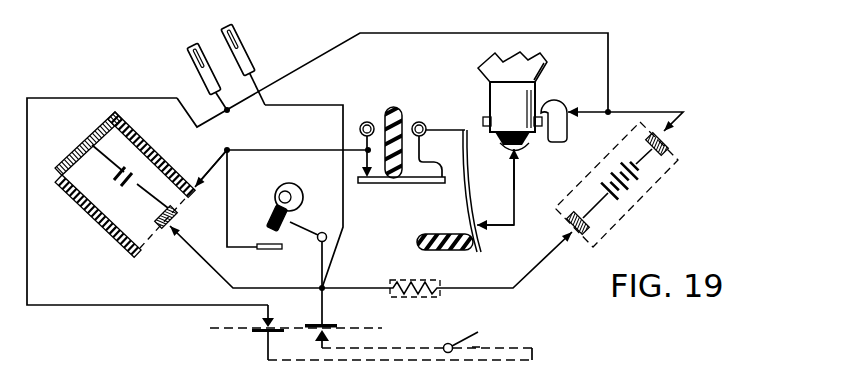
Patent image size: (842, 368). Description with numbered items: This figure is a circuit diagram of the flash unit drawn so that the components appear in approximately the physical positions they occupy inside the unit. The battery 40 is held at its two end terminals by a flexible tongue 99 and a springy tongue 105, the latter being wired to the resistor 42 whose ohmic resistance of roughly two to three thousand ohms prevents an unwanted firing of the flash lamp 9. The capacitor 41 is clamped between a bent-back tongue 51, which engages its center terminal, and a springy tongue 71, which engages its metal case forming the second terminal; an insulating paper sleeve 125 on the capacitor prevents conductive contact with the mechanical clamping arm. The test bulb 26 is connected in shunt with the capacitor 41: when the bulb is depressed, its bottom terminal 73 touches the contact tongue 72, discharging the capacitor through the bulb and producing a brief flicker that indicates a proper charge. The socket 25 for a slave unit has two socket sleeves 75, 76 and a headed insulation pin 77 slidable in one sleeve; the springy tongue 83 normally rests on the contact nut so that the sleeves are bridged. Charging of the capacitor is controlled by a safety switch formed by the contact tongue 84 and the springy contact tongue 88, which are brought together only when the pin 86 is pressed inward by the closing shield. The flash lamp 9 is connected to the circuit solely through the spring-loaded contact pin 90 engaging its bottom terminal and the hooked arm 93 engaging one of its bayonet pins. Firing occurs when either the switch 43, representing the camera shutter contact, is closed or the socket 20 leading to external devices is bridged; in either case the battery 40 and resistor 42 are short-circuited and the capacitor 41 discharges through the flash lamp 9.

The socket 20 is at (218, 30).
The flash lamp 9 is at (550, 68).
The socket 25 is at (380, 100).
The test bulb 26 is at (272, 199).
The battery 40 is at (614, 210).
The capacitor 41 is at (83, 175).
The resistor 42 is at (417, 280).
The switch 43 is at (474, 338).
The bent-back tongue 51 is at (164, 230).
The springy tongue 71 is at (195, 180).
The contact tongue 72 is at (265, 250).
The bottom terminal 73 is at (271, 224).
The socket sleeve 75 is at (362, 125).
The socket sleeve 76 is at (423, 123).
The headed insulation pin 77 is at (398, 122).
The springy tongue 83 is at (410, 184).
The contact tongue 84 is at (467, 202).
The pin 86 is at (437, 233).
The springy contact tongue 88 is at (490, 228).
The contact pin 90 is at (522, 153).
The hooked arm 93 is at (553, 110).
The flexible tongue 99 is at (672, 131).
The springy tongue 105 is at (572, 240).
The paper sleeve 125 is at (103, 218).